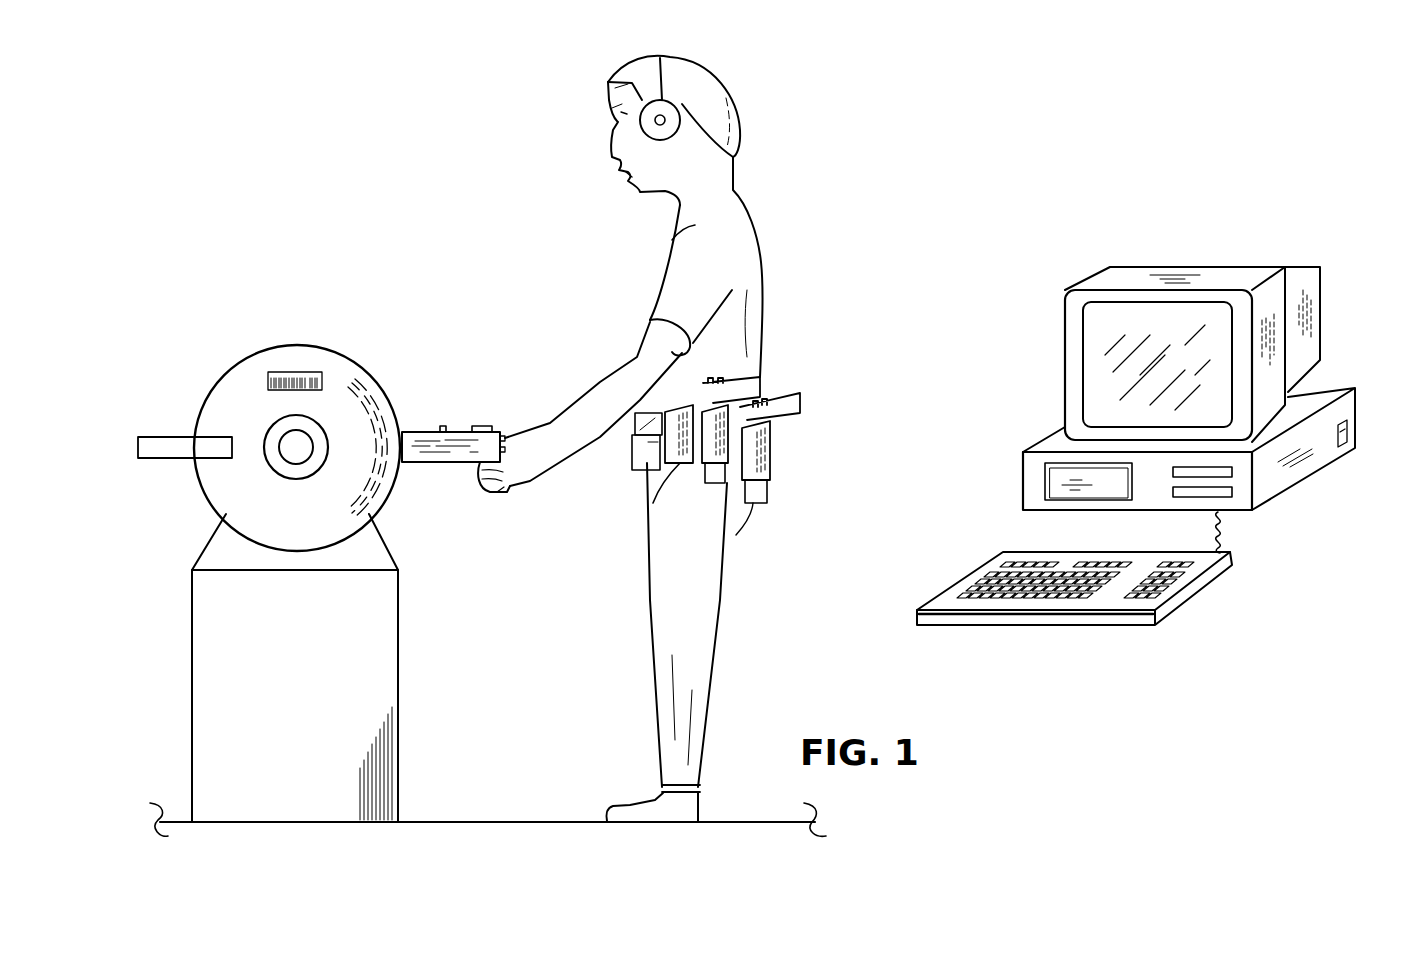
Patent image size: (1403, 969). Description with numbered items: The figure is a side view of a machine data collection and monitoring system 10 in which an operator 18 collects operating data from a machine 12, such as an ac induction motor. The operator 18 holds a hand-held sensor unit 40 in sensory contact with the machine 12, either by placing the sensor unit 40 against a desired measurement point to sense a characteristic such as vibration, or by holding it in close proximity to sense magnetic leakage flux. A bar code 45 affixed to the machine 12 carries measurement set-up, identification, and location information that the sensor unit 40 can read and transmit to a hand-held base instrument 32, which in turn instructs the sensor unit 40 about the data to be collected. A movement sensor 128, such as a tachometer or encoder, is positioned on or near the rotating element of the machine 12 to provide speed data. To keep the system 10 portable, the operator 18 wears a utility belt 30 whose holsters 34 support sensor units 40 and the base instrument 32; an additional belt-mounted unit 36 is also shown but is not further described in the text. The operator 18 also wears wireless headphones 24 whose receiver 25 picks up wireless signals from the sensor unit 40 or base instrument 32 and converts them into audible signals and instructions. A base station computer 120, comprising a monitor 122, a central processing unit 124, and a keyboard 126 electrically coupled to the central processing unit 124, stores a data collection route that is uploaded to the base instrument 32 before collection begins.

The machine data collection and monitoring system 10 is at (382, 146).
The machine 12 is at (288, 347).
The operator 18 is at (800, 237).
The wireless headphones 24 is at (648, 70).
The receiver 25 is at (670, 108).
The utility belt 30 is at (720, 483).
The base instrument 32 is at (647, 460).
The holsters 34 is at (683, 465).
The belt-mounted unit 36 is at (637, 417).
The hand-held sensor unit 40 is at (470, 418).
The bar code 45 is at (323, 372).
The base station computer 120 is at (1232, 219).
The monitor 122 is at (1313, 349).
The central processing unit 124 is at (1325, 437).
The keyboard 126 is at (1223, 568).
The movement sensor 128 is at (146, 436).